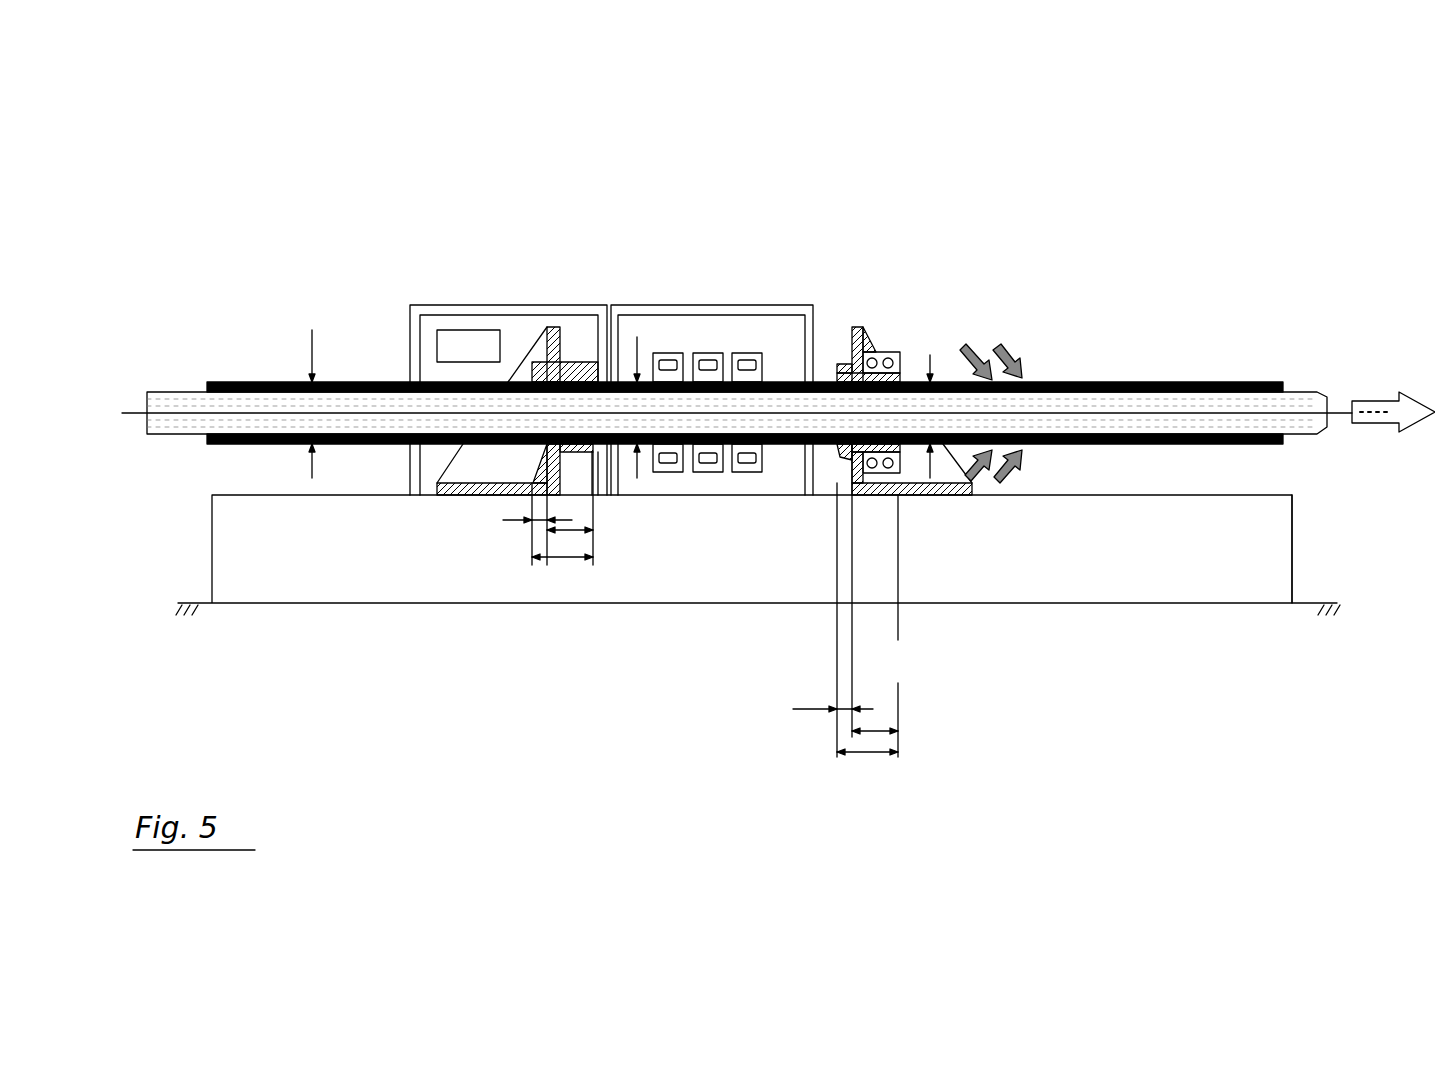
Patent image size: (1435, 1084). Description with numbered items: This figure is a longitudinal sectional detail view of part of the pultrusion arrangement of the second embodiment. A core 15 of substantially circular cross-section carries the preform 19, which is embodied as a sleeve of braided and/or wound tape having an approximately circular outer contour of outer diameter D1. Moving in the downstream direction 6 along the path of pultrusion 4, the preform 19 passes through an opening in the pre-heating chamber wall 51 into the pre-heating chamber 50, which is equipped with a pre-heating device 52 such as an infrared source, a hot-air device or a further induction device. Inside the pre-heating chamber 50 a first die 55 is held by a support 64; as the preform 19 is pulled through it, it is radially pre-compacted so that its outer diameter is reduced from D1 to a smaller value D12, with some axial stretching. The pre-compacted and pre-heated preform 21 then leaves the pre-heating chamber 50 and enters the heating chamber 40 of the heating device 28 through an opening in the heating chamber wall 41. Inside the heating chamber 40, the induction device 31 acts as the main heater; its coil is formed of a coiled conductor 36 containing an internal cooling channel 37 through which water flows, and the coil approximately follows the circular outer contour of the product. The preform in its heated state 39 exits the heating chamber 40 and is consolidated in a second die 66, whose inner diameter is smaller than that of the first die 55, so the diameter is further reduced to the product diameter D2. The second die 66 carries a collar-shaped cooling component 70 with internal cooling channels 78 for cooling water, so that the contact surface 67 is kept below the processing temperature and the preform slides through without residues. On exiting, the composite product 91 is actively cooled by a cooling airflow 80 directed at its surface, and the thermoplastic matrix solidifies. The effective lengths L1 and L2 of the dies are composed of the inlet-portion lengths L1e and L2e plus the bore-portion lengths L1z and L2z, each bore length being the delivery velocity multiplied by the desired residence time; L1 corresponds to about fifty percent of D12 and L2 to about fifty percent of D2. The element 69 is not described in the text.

The path of pultrusion 4 is at (1233, 412).
The downstream direction 6 is at (1375, 402).
The core 15 is at (1140, 434).
The preform 19 is at (215, 445).
The pre-compacted and pre-heated preform 21 is at (645, 383).
The heating device 28 is at (753, 247).
The induction device 31 is at (727, 480).
The coiled conductor 36 is at (657, 472).
The internal cooling channel 37 is at (710, 472).
The preform in heated state 39 is at (858, 444).
The heating chamber 40 is at (763, 330).
The heating chamber wall 41 is at (673, 307).
The pre-heating chamber 50 is at (522, 327).
The pre-heating chamber wall 51 is at (443, 305).
The pre-heating device 52 is at (452, 340).
The first die 55 is at (535, 458).
The support 64 is at (463, 473).
The second die 66 is at (838, 460).
The contact surface 67 is at (870, 388).
The lower bearing block 69 is at (918, 473).
The cooling component 70 is at (905, 352).
The internal cooling channels 78 is at (888, 358).
The cooling airflow 80 is at (1002, 352).
The composite product 91 is at (1278, 444).
The outer diameter of preform D1 is at (310, 350).
The outer diameter of pre-compacted preform D12 is at (638, 353).
The outer diameter of product D2 is at (933, 465).
The effective length of first die L1 is at (550, 557).
The inlet portion length of first die L1e is at (526, 534).
The cylindrical bore portion length of first die L1z is at (568, 530).
The effective length of second die L2 is at (862, 752).
The inlet portion length of second die L2e is at (807, 709).
The cylindrical bore portion length of second die L2z is at (873, 731).